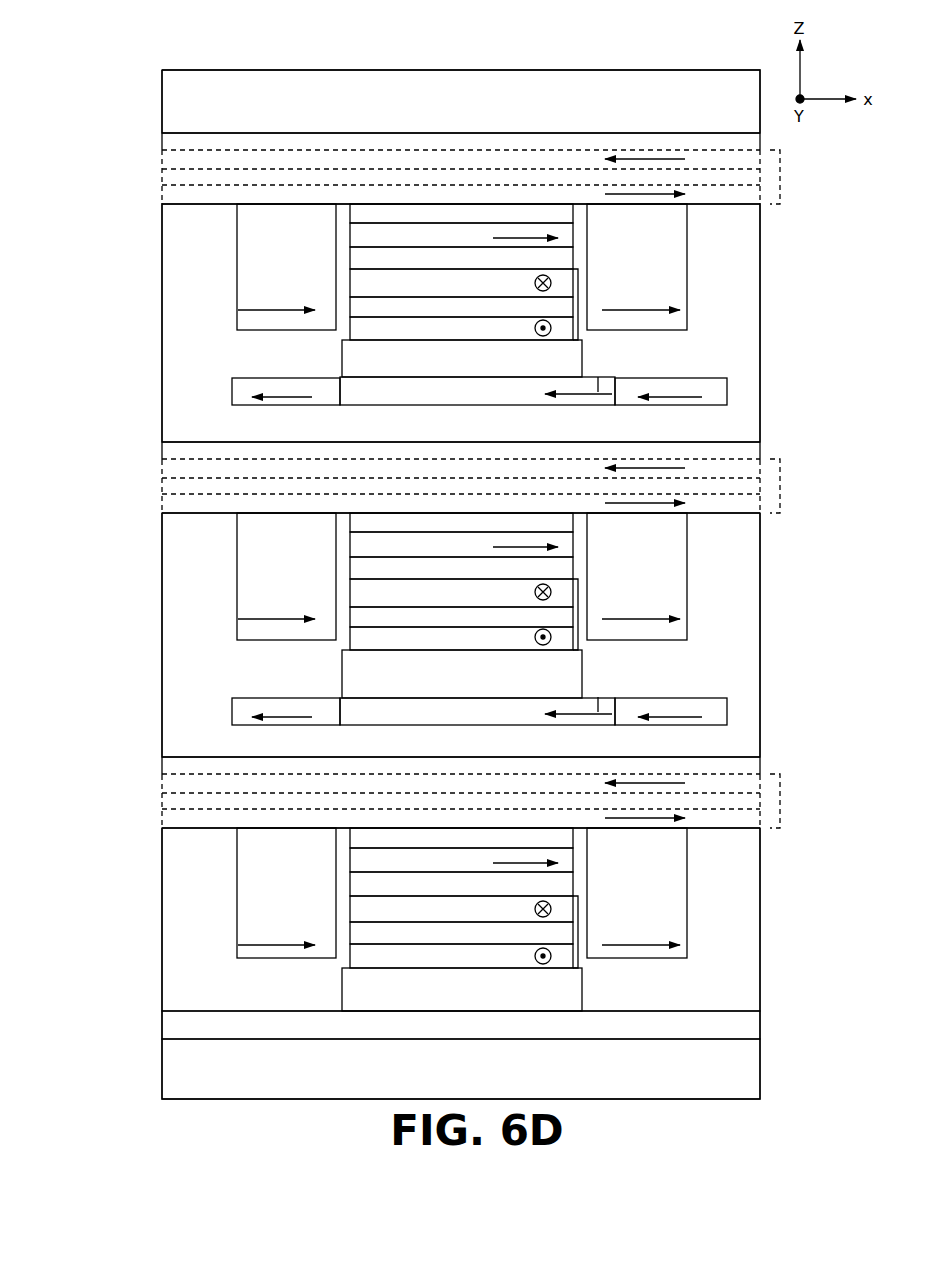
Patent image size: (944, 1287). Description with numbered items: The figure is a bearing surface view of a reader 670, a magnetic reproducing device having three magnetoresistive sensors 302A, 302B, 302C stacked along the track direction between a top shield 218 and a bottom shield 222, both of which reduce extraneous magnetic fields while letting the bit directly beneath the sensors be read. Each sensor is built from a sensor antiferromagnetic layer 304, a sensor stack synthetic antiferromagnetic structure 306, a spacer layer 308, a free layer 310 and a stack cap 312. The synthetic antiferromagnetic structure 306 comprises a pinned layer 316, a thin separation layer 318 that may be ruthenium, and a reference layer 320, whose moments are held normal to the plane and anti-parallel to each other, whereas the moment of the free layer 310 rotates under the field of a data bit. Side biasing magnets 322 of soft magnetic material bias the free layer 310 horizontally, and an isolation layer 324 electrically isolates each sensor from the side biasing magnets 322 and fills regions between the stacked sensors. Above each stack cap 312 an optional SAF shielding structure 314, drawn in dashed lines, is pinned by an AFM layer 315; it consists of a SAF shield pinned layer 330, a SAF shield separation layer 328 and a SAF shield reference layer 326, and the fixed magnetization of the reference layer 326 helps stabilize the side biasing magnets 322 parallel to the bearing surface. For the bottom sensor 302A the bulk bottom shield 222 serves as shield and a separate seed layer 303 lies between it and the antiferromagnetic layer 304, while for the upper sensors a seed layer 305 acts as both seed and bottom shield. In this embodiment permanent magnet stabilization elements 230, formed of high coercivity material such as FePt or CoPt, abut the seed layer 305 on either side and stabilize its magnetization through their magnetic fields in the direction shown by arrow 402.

The reader 670 is at (108, 85).
The top shield 218 is at (461, 101).
The AFM layer 315 is at (461, 453).
The SAF shield pinned layer 330 is at (461, 471).
The SAF shield separation layer 328 is at (461, 489).
The SAF shield reference layer 326 is at (461, 506).
The SAF shielding structure 314 is at (790, 801).
The stack cap 312 is at (461, 526).
The free layer 310 is at (461, 547).
The spacer layer 308 is at (461, 571).
The reference layer 320 is at (461, 595).
The separation layer 318 is at (461, 620).
The pinned layer 316 is at (461, 642).
The sensor antiferromagnetic layer 304 is at (462, 675).
The seed layer 305 is at (477, 551).
The stabilization element 230 is at (479, 551).
The side biasing magnets 322 is at (462, 581).
The isolation layer 324 is at (342, 213).
The sensor stack synthetic antiferromagnetic structure 306 is at (578, 304).
The magnetoresistive sensor 302C is at (778, 250).
The magnetoresistive sensor 302B is at (778, 557).
The magnetoresistive sensor 302A is at (776, 848).
The arrow 402 is at (598, 392).
The seed layer 303 is at (461, 1025).
The bottom shield 222 is at (461, 1069).